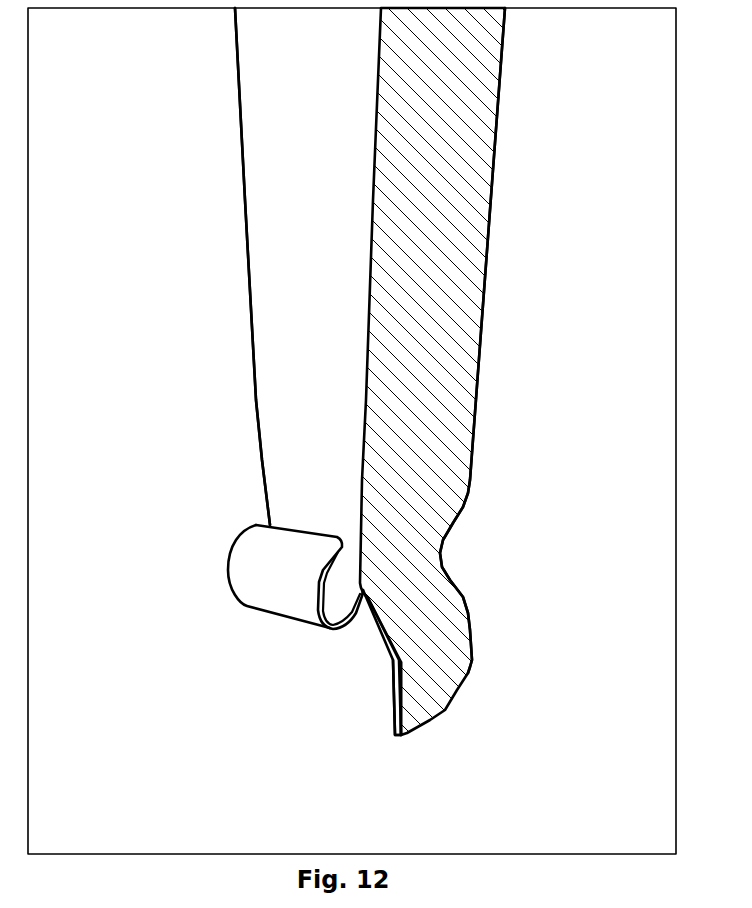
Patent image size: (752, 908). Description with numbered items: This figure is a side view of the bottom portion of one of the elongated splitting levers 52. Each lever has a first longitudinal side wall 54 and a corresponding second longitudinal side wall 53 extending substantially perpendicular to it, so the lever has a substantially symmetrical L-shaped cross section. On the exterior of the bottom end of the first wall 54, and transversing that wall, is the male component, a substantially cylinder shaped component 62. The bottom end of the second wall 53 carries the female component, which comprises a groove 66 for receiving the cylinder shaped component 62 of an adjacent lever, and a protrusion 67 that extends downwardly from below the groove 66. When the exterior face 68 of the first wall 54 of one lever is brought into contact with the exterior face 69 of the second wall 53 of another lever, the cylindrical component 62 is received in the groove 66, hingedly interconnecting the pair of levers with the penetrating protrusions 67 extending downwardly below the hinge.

The elongated splitting lever 52 is at (545, 354).
The second longitudinal side wall 53 is at (462, 265).
The first longitudinal side wall 54 is at (268, 265).
The cylinder shaped component 62 is at (265, 630).
The groove 66 is at (398, 562).
The protrusion 67 is at (420, 727).
The exterior face of the first wall 68 is at (283, 146).
The exterior face of the second wall 69 is at (433, 146).